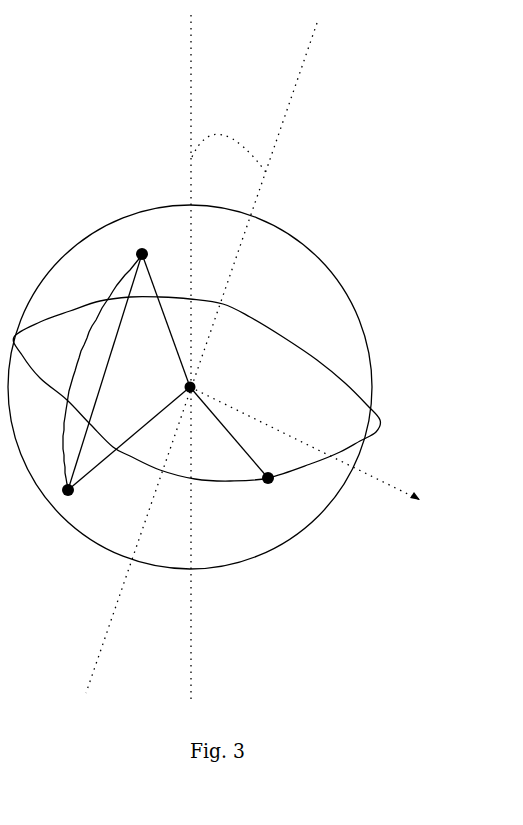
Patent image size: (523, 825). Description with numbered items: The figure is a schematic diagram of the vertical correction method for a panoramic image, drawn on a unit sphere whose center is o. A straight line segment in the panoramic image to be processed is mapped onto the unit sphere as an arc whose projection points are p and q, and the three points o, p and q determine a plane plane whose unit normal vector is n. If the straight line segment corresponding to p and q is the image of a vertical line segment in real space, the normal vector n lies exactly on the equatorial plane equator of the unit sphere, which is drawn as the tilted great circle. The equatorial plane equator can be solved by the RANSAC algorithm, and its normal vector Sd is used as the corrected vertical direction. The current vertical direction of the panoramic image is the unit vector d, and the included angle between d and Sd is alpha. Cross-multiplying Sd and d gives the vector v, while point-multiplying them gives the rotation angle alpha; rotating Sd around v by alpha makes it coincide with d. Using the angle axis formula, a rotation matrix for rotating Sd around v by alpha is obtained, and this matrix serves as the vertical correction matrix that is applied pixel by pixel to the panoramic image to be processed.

The current vertical direction d is at (165, 359).
The normal vector of the equatorial plane Sd is at (222, 358).
The rotation angle alpha is at (236, 135).
The equatorial plane equator is at (206, 389).
The element plane is at (121, 372).
The center of the unit sphere o is at (206, 388).
The projection point p is at (152, 253).
The projection point q is at (80, 488).
The unit normal vector n is at (284, 485).
The rotation axis vector v is at (322, 455).